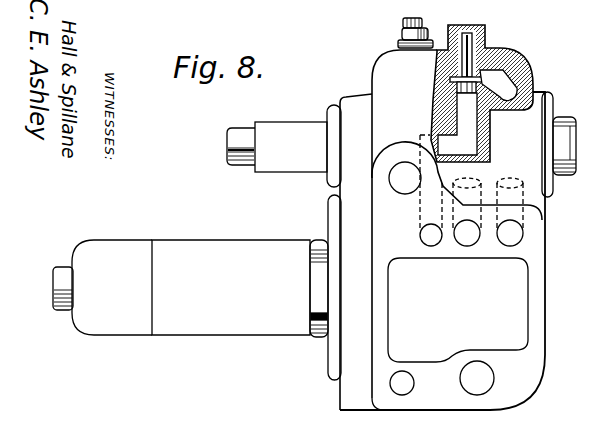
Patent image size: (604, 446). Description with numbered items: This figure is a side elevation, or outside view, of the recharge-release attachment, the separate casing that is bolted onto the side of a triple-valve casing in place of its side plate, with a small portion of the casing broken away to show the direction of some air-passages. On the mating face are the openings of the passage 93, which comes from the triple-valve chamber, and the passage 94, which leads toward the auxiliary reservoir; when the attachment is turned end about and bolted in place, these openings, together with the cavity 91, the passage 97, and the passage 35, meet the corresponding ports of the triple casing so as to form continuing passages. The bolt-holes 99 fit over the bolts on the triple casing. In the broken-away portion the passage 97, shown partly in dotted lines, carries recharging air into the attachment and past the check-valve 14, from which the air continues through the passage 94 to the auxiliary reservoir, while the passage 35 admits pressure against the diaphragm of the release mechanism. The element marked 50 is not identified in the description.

The check-valve 14 is at (482, 70).
The passage 35 is at (403, 380).
The bonnet cap 50 is at (423, 21).
The cavity 91 is at (458, 310).
The passage 93 is at (466, 240).
The passage 94 is at (513, 241).
The passage 97 is at (503, 83).
The bolt-holes 99 is at (477, 375).